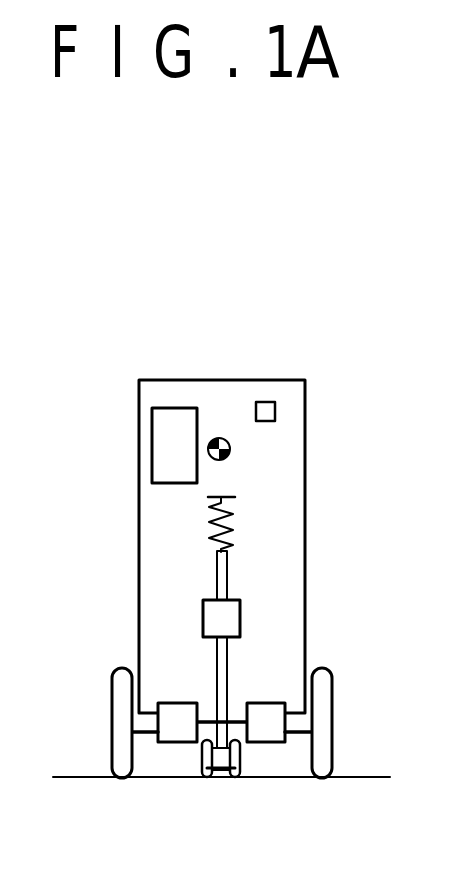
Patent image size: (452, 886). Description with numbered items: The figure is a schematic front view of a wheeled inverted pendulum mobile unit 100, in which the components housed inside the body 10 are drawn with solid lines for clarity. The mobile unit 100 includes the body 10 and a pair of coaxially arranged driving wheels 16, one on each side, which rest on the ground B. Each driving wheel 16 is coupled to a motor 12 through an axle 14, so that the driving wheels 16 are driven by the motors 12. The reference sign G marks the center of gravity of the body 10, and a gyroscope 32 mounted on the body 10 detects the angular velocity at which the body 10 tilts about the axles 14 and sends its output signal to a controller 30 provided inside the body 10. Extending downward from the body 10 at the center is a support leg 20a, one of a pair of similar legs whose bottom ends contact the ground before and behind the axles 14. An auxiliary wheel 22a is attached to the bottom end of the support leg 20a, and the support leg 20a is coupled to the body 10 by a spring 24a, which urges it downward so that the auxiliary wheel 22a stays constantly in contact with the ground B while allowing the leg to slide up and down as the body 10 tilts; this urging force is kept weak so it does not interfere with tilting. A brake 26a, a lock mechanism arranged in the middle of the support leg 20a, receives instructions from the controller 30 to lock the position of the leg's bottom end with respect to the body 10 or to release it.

The mobile unit 100 is at (111, 228).
The body 10 is at (305, 424).
The motor 12 is at (180, 732).
The axle 14 is at (148, 723).
The driving wheel 16 is at (120, 720).
The support leg 20a is at (219, 652).
The auxiliary wheel 22a is at (205, 778).
The spring 24a is at (230, 513).
The brake 26a is at (213, 612).
The controller 30 is at (168, 430).
The gyroscope 32 is at (265, 408).
The center of gravity G is at (233, 452).
The ground B is at (72, 775).